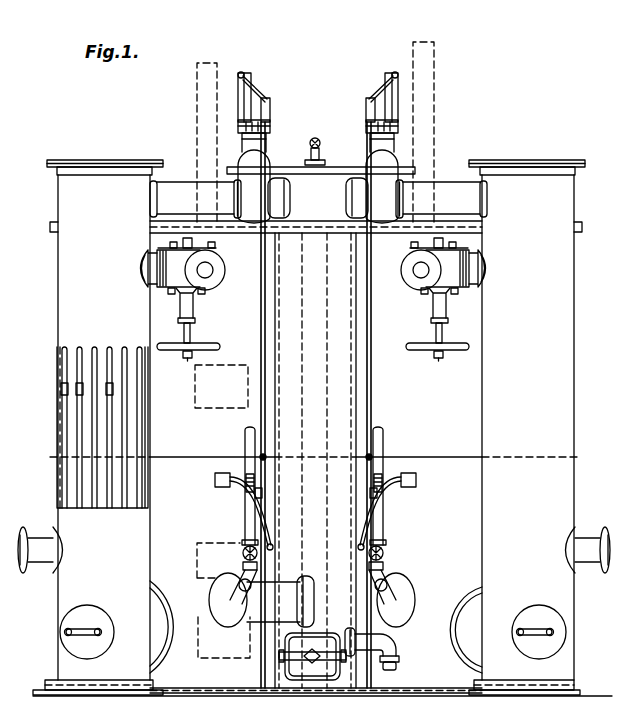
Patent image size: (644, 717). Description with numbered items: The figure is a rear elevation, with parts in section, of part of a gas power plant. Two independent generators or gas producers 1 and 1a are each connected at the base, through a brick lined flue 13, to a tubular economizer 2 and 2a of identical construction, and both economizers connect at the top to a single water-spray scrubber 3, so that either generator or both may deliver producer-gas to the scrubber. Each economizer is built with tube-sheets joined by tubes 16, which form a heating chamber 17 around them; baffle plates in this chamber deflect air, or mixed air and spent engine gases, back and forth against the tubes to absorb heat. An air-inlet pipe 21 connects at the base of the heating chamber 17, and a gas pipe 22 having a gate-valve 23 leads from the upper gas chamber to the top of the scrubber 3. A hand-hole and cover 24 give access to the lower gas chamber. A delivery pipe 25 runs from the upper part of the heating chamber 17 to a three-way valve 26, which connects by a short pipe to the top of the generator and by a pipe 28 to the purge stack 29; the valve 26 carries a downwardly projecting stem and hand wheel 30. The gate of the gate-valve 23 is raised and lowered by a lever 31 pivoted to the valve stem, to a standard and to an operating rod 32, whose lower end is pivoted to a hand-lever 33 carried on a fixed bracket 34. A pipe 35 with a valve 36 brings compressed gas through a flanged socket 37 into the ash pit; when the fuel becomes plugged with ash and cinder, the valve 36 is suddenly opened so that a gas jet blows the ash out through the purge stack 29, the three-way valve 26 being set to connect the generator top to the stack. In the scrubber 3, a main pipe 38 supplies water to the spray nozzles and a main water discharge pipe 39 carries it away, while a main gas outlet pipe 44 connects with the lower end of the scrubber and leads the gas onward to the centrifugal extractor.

The generator 1 is at (43, 482).
The generator 1a is at (574, 500).
The tubular economizer 2 is at (108, 164).
The tubular economizer 2a is at (538, 164).
The water-spray scrubber 3 is at (291, 167).
The brick lined flue 13 is at (152, 638).
The tubes 16 is at (83, 420).
The heating chamber 17 is at (57, 450).
The air-inlet pipe 21 is at (37, 540).
The gas pipe 22 is at (210, 182).
The gate-valve 23 is at (242, 162).
The hand-hole and cover 24 is at (70, 617).
The delivery pipe 25 is at (138, 268).
The three-way valve 26 is at (178, 291).
The pipe 28 is at (226, 268).
The purge stack 29 is at (201, 118).
The hand wheel 30 is at (195, 346).
The lever 31 is at (263, 93).
The operating rod 32 is at (370, 143).
The hand-lever 33 is at (265, 530).
The fixed bracket 34 is at (216, 480).
The pipe 35 is at (244, 522).
The valve 36 is at (243, 552).
The flanged socket 37 is at (210, 602).
The main pipe 38 is at (315, 138).
The main water discharge pipe 39 is at (398, 643).
The main gas outlet pipe 44 is at (280, 601).